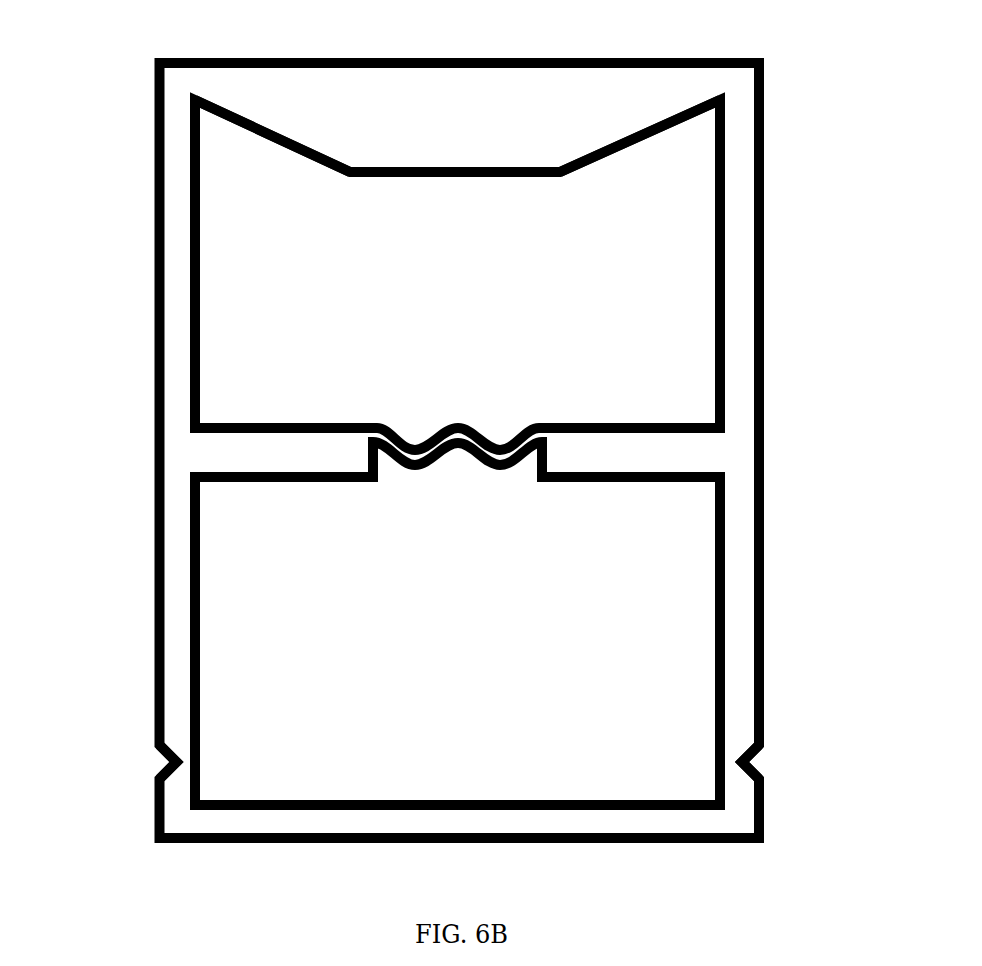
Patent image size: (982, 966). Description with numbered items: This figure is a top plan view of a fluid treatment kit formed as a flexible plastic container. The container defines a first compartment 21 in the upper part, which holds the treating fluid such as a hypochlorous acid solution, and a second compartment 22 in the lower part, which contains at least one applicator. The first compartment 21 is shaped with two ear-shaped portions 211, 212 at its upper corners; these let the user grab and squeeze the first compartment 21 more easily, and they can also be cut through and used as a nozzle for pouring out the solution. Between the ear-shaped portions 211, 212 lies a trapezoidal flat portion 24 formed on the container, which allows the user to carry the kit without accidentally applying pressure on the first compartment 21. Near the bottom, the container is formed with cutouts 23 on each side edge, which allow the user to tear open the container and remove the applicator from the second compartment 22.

The trapezoidal flat portion 24 is at (455, 113).
The cutout 23 is at (148, 762).
The first compartment 21 is at (227, 255).
The ear-shaped portion 211 is at (683, 152).
The ear-shaped portion 212 is at (230, 152).
The second compartment 22 is at (224, 577).